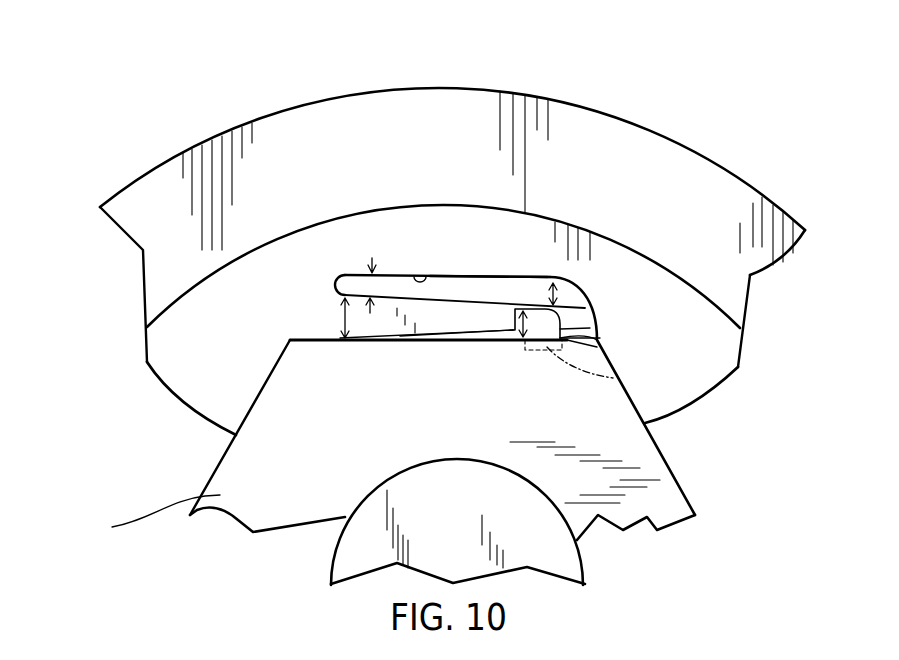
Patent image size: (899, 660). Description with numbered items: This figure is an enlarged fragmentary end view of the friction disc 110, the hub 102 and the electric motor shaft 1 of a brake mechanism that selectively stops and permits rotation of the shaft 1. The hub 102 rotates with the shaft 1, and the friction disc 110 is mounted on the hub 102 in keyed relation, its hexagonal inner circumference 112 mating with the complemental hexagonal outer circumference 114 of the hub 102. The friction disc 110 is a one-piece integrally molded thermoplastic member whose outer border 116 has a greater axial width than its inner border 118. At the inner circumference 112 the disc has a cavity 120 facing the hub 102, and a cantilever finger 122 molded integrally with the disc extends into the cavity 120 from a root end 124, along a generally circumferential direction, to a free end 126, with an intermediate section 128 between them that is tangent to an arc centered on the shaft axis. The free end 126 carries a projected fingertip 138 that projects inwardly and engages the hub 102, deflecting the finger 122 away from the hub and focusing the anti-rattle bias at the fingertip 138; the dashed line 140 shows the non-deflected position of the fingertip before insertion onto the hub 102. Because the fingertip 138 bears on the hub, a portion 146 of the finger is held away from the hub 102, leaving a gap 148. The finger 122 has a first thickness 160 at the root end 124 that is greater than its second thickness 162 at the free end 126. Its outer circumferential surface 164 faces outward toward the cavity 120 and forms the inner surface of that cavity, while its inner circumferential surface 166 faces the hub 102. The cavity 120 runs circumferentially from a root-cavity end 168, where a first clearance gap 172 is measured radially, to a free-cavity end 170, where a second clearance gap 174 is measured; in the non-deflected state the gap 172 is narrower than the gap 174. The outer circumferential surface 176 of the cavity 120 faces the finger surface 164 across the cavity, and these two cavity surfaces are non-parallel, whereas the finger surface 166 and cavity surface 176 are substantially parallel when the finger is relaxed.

The electric motor shaft 1 is at (577, 560).
The hub 102 is at (147, 517).
The friction disc 110 is at (297, 106).
The hexagonal inner circumference 112 is at (253, 405).
The hexagonal outer circumference 114 is at (673, 463).
The outer border 116 is at (138, 222).
The inner border 118 is at (155, 340).
The cavity 120 is at (490, 276).
The cantilever finger 122 is at (590, 328).
The root end 124 is at (303, 312).
The free end 126 is at (600, 338).
The intermediate section 128 is at (430, 322).
The projected fingertip 138 is at (597, 347).
The dashed line 140 is at (613, 378).
The portion of cantilever finger 146 is at (477, 320).
The gap 148 is at (502, 337).
The first thickness 160 is at (340, 322).
The second thickness 162 is at (523, 340).
The outer circumferential surface of cantilever finger 164 is at (398, 273).
The inner circumferential surface of cantilever finger 166 is at (388, 339).
The root-cavity end 168 is at (336, 286).
The free-cavity end 170 is at (575, 310).
The first clearance gap 172 is at (368, 258).
The second clearance gap 174 is at (575, 293).
The outer circumferential surface of cavity 176 is at (425, 274).